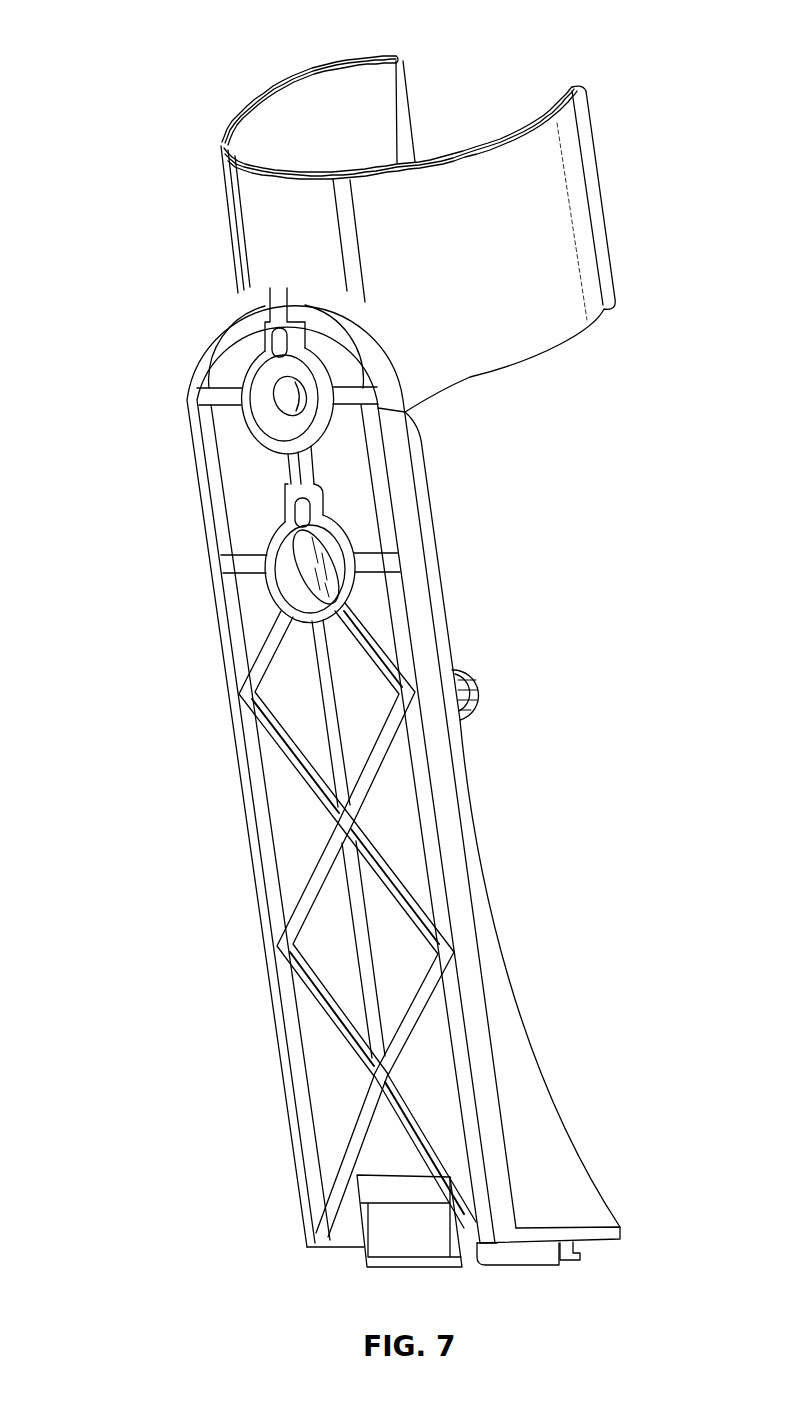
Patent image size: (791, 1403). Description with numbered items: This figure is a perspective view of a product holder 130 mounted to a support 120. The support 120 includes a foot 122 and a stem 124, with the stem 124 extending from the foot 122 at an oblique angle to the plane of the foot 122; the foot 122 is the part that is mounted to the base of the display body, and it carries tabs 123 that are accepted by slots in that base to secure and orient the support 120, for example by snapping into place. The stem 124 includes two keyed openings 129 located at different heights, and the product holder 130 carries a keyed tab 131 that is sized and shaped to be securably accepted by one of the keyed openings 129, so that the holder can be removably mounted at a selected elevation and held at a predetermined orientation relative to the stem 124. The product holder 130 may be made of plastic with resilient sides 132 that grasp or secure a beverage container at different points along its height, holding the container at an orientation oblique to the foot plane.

The support 120 is at (263, 1088).
The foot 122 is at (610, 1243).
The tabs 123 is at (412, 1268).
The stem 124 is at (458, 838).
The keyed openings 129 is at (260, 592).
The product holder 130 is at (229, 85).
The keyed tab 131 is at (237, 428).
The resilient sides 132 is at (325, 68).